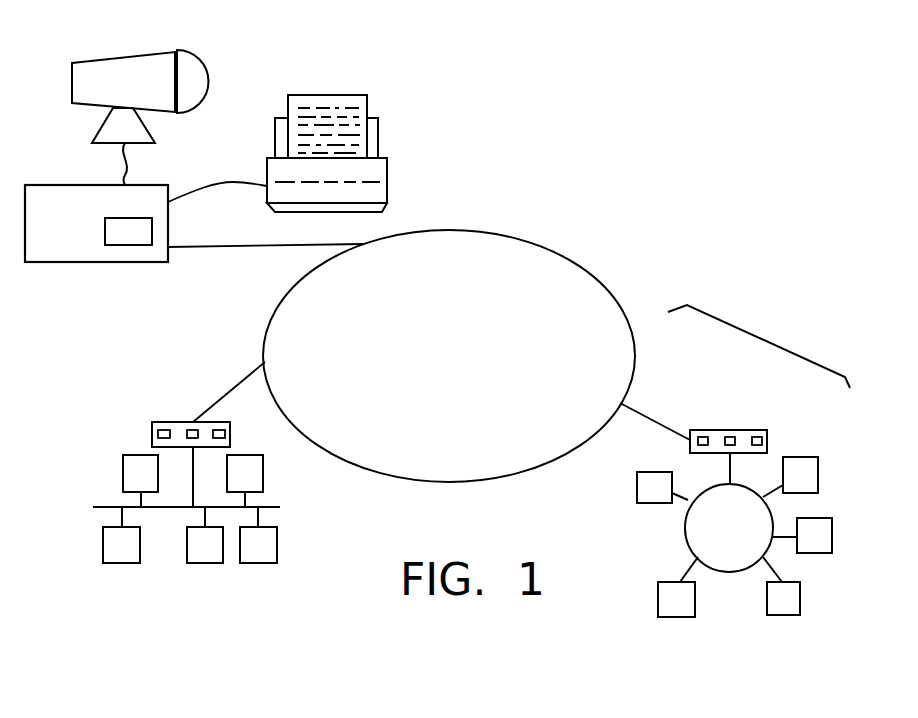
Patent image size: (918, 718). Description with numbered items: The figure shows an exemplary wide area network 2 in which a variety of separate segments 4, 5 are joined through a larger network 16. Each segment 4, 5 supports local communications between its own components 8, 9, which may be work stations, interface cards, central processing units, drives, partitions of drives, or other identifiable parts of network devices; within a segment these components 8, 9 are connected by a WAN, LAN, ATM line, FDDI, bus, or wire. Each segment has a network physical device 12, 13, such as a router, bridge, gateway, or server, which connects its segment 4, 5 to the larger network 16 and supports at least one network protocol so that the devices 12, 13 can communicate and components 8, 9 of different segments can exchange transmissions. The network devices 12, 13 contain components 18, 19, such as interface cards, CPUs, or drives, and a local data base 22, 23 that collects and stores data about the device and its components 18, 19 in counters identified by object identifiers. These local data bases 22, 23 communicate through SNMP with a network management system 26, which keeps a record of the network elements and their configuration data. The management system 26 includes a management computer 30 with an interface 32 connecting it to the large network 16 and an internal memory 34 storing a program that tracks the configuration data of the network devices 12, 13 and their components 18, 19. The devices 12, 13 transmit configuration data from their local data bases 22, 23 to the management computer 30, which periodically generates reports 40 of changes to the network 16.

The wide area network 2 is at (767, 338).
The segment 4 is at (162, 507).
The segment 5 is at (686, 535).
The components 8 is at (123, 477).
The components 9 is at (637, 480).
The network device 12 is at (152, 433).
The network device 13 is at (767, 436).
The network 16 is at (560, 253).
The components 18 is at (222, 430).
The components 19 is at (722, 433).
The local data base 22 is at (164, 429).
The local data base 23 is at (755, 437).
The network management system 26 is at (309, 68).
The management computer 30 is at (53, 185).
The interface 32 is at (182, 247).
The internal memory 34 is at (123, 245).
The reports 40 is at (365, 100).